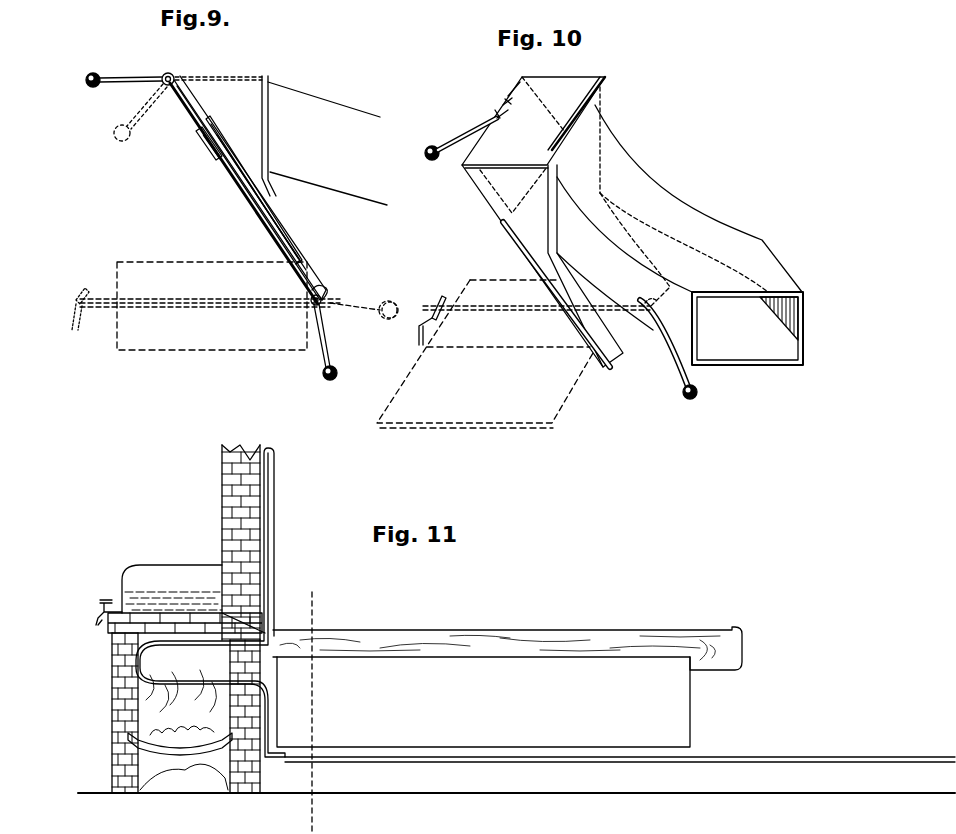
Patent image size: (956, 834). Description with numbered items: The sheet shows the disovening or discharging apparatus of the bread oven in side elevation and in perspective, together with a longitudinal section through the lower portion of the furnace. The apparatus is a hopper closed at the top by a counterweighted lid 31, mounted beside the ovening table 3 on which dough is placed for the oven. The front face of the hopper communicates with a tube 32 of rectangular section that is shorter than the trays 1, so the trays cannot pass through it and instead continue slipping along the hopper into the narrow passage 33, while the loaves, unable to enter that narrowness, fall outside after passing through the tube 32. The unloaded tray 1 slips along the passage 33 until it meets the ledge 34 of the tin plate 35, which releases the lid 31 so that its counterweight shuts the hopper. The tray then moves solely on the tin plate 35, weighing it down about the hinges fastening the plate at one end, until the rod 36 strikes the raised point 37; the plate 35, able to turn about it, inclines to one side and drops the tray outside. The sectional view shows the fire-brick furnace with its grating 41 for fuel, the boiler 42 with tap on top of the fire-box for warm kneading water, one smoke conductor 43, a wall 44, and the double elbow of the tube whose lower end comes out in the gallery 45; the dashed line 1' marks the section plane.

In FIG. 10, the trays 1 is at (485, 351).
In FIG. 9, the ovening table 3 is at (281, 140).
In FIG. 9, the lid 31 is at (207, 92).
In FIG. 10, the lid 31 is at (500, 121).
In FIG. 10, the tube of rectangular section 32 is at (632, 238).
In FIG. 9, the narrow passage 33 is at (275, 228).
In FIG. 10, the narrow passage 33 is at (536, 266).
In FIG. 9, the ledge 34 is at (322, 290).
In FIG. 9, the tin plate 35 is at (300, 266).
In FIG. 10, the tin plate 35 is at (516, 354).
In FIG. 9, the rod 36 is at (212, 147).
In FIG. 10, the rod 36 is at (438, 292).
In FIG. 9, the raised point 37 is at (110, 298).
In FIG. 10, the raised point 37 is at (406, 331).
In FIG. 11, the grating 41 is at (185, 745).
In FIG. 11, the boiler 42 is at (180, 599).
In FIG. 11, the smoke conductor 43 is at (405, 637).
In FIG. 11, the brick wall 44 is at (100, 713).
In FIG. 11, the gallery 45 is at (460, 757).
In FIG. 11, the section line 1' is at (312, 698).